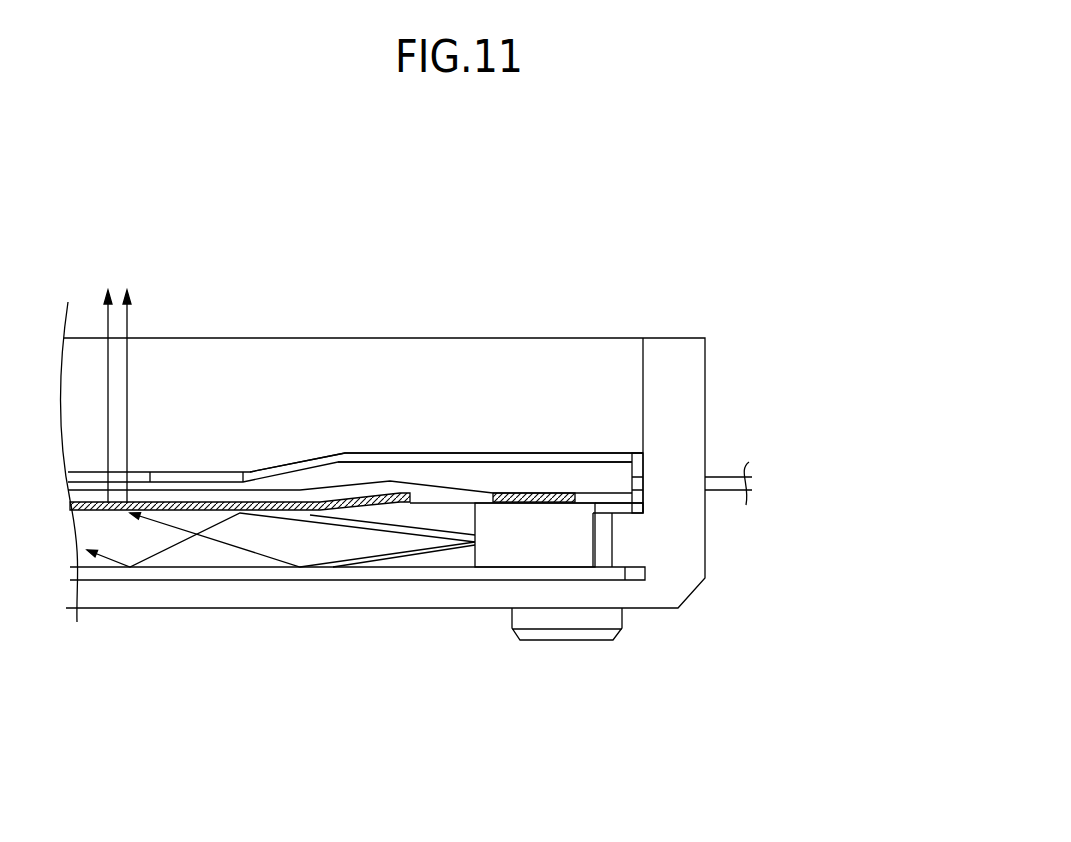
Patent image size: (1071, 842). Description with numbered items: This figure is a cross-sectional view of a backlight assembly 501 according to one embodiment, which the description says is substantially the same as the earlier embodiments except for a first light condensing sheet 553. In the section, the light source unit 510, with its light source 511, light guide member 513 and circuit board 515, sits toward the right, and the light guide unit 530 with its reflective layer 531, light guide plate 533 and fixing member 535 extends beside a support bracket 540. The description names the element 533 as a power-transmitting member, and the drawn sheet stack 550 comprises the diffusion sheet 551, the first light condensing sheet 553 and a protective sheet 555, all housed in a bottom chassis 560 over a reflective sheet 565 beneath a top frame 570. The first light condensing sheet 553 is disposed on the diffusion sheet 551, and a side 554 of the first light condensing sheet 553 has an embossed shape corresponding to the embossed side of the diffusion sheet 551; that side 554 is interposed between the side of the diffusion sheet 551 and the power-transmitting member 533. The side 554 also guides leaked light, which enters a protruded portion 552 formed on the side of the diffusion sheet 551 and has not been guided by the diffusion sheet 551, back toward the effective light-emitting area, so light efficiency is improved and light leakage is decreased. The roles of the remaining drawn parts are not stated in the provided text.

The backlight assembly 501 is at (446, 185).
The light source unit 510 is at (323, 686).
The light source 511 is at (475, 560).
The light guide member 513 is at (437, 503).
The circuit board 515 is at (340, 568).
The light guide unit 530 is at (808, 378).
The reflective layer 531 is at (568, 513).
The power-transmitting member 533 is at (563, 472).
The fixing member 535 is at (716, 483).
The support bracket 540 is at (620, 498).
The optical sheet unit 550 is at (178, 270).
The diffusion sheet 551 is at (270, 510).
The protruded portion 552 is at (390, 457).
The first light condensing sheet 553 is at (222, 498).
The side of the first light condensing sheet 554 is at (347, 457).
The protective sheet 555 is at (187, 490).
The bottom chassis 560 is at (690, 558).
The reflective sheet 565 is at (248, 573).
The top frame 570 is at (538, 457).